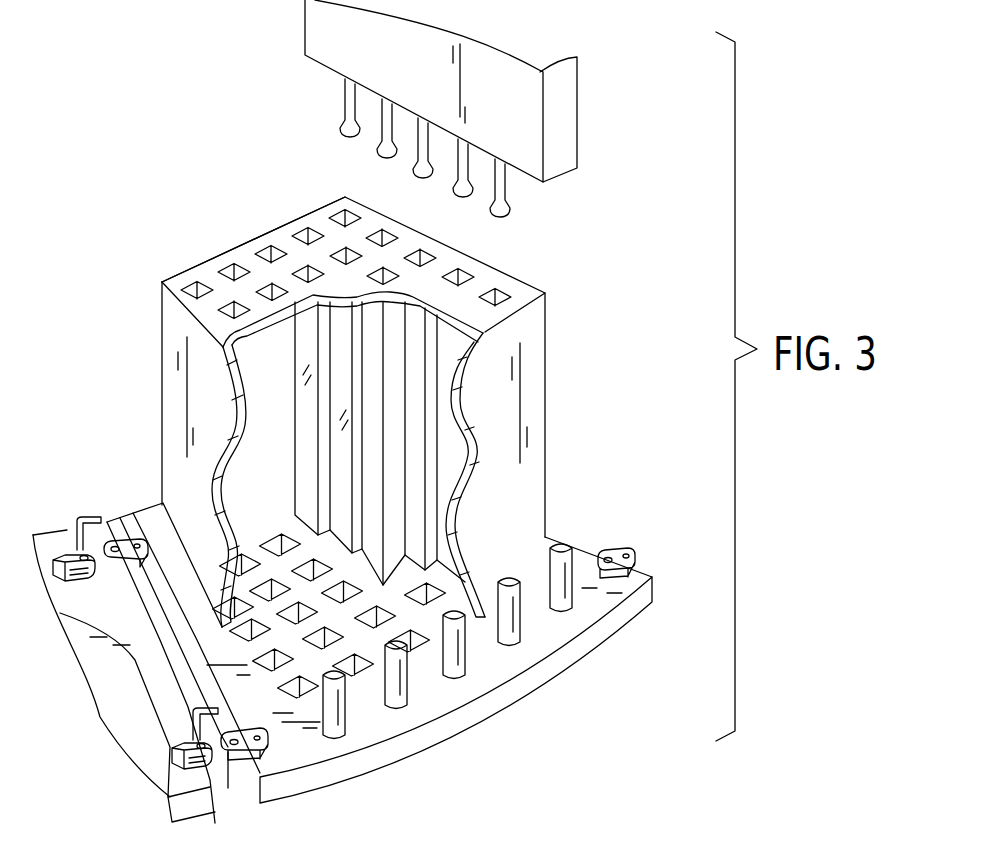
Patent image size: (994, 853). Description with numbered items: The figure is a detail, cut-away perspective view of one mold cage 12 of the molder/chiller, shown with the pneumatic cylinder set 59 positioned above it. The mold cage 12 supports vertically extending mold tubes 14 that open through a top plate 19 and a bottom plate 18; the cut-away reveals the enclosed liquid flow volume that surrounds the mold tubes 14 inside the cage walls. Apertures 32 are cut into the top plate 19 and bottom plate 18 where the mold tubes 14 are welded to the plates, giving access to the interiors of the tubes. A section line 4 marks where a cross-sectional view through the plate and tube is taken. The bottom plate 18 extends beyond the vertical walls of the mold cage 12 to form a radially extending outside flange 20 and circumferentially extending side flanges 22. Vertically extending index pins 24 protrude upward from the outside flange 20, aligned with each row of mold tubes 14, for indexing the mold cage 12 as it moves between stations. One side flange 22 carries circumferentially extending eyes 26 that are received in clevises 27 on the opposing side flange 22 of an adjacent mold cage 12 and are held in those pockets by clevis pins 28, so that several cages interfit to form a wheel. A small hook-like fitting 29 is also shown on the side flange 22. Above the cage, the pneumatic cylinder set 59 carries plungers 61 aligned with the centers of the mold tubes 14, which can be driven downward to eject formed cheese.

The section line 4- 4 is at (480, 332).
The mold cage 12 is at (346, 520).
The mold tubes 14 is at (337, 222).
The bottom plate 18 is at (632, 580).
The top plate 19 is at (182, 283).
The outside flange 20 is at (366, 662).
The side flanges 22 is at (173, 608).
The index pins 24 is at (515, 627).
The eyes 26 is at (228, 790).
The clevises 27 is at (190, 773).
The clevis pins 28 is at (262, 426).
The hook 29 is at (78, 515).
The apertures 32 is at (232, 268).
The pneumatic cylinder set 59 is at (562, 98).
The plungers 61 is at (415, 177).